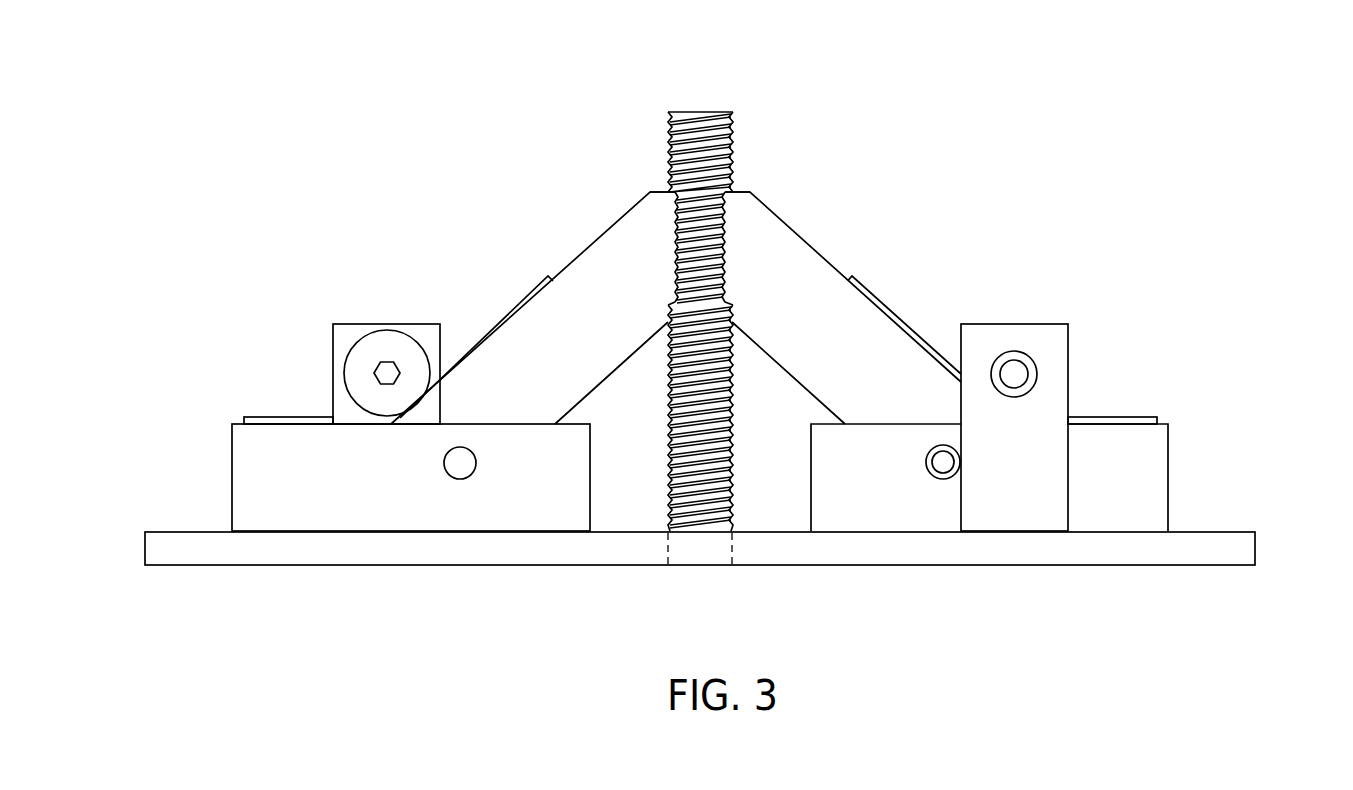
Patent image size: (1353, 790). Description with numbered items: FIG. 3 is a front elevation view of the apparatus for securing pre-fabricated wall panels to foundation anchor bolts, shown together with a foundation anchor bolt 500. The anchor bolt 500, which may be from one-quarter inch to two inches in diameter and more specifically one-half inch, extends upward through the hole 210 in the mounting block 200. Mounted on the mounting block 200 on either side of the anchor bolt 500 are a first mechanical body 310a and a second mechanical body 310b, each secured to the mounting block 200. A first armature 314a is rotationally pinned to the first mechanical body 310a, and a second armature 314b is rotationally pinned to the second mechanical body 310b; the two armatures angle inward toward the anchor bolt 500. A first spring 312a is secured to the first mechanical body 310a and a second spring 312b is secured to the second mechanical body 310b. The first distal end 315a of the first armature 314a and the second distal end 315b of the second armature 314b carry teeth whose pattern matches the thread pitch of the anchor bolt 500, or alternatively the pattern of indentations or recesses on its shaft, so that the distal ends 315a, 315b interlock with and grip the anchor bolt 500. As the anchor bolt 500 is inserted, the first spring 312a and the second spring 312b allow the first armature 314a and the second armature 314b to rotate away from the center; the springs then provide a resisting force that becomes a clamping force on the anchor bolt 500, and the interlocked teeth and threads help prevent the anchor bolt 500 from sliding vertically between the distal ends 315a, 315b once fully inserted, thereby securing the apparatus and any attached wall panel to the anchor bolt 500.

The mounting block 200 is at (1107, 550).
The hole 210 is at (652, 552).
The first mechanical body 310a is at (1138, 465).
The second mechanical body 310b is at (265, 467).
The first spring 312a is at (1038, 323).
The second spring 312b is at (367, 323).
The first armature 314a is at (788, 255).
The second armature 314b is at (612, 255).
The first distal end 315a is at (750, 146).
The second distal end 315b is at (650, 146).
The foundation anchor bolt 500 is at (692, 111).